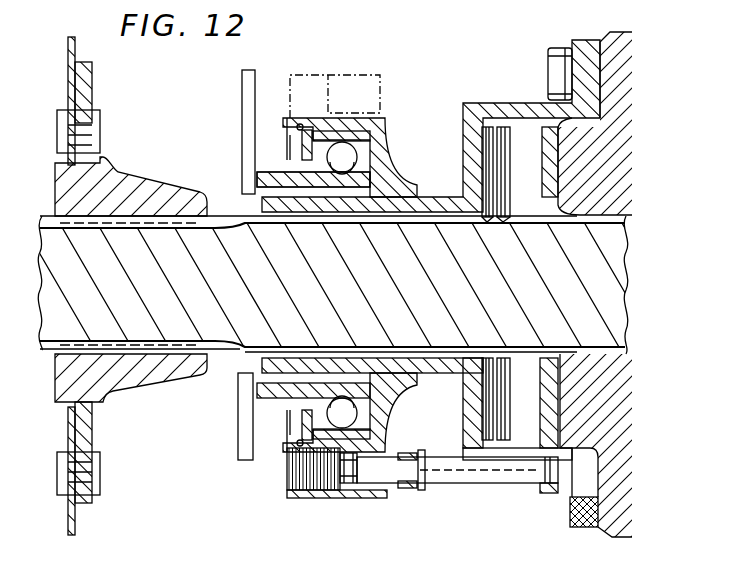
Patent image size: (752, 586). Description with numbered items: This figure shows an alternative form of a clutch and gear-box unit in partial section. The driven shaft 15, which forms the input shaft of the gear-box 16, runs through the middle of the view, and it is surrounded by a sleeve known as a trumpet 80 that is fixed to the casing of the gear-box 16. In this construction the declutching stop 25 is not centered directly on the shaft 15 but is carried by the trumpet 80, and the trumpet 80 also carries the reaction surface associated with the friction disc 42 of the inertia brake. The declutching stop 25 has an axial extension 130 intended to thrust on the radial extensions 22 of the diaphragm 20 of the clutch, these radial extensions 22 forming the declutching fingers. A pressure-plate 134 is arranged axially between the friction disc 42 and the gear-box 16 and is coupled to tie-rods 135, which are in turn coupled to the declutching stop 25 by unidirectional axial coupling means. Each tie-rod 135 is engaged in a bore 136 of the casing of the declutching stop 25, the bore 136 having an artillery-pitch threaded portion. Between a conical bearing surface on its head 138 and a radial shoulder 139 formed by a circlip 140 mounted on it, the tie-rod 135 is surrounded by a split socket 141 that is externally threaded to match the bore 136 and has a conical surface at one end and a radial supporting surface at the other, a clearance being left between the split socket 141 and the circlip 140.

The shaft 15 is at (213, 258).
The gear-box 16 is at (564, 510).
The diaphragm 20 is at (234, 93).
The radial extensions 22 is at (241, 123).
The declutching stop 25 is at (371, 112).
The friction disc 42 is at (511, 401).
The trumpet 80 is at (440, 192).
The axial extension 130 is at (262, 173).
The pressure-plate 134 is at (540, 115).
The tie-rods 135 is at (447, 474).
The bore 136 is at (290, 483).
The head 138 is at (340, 458).
The radial shoulder 139 is at (417, 488).
The circlip 140 is at (425, 455).
The split socket 141 is at (405, 452).